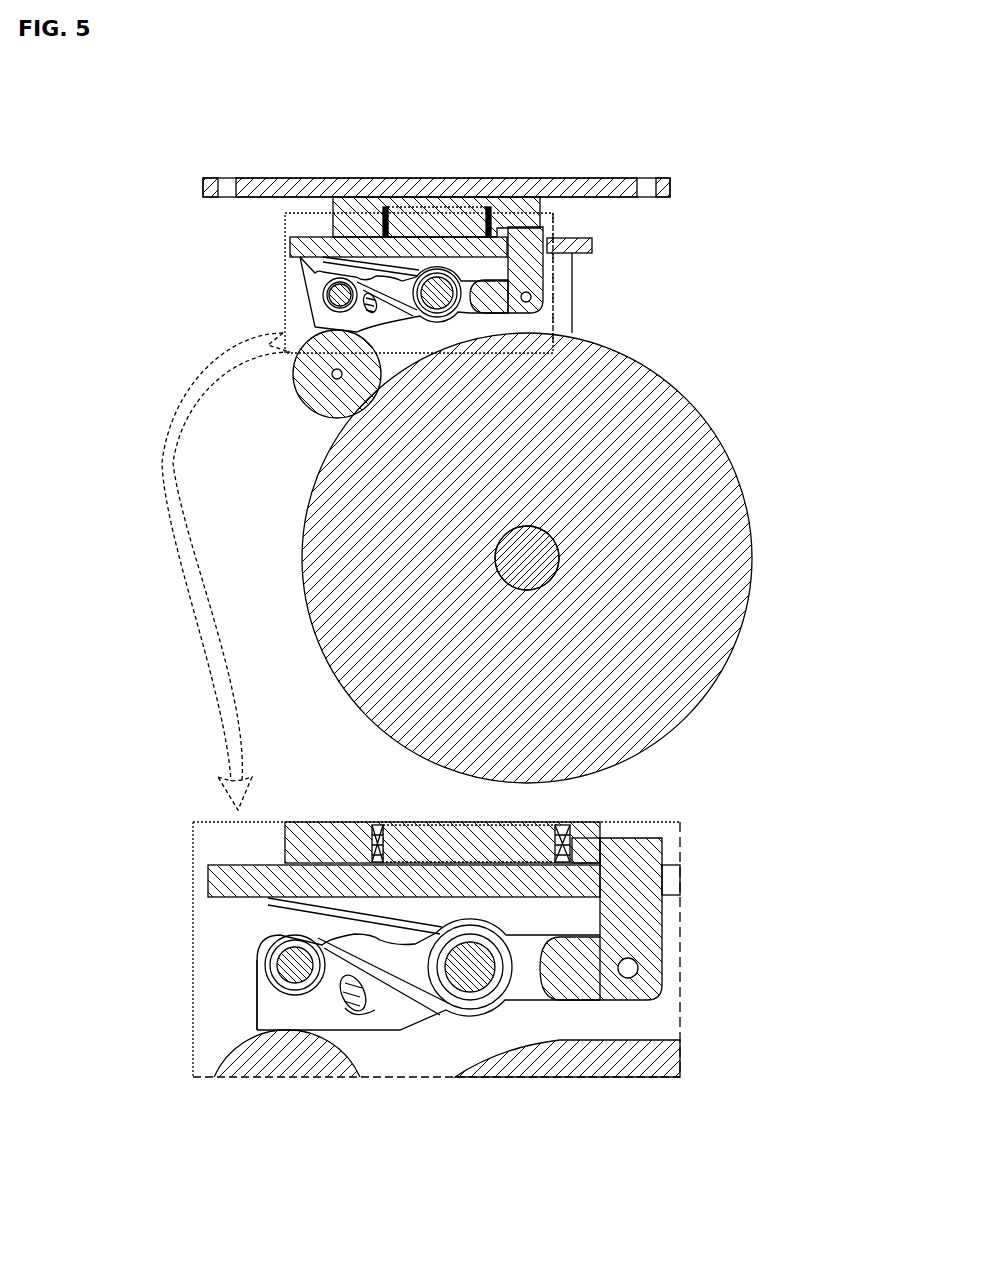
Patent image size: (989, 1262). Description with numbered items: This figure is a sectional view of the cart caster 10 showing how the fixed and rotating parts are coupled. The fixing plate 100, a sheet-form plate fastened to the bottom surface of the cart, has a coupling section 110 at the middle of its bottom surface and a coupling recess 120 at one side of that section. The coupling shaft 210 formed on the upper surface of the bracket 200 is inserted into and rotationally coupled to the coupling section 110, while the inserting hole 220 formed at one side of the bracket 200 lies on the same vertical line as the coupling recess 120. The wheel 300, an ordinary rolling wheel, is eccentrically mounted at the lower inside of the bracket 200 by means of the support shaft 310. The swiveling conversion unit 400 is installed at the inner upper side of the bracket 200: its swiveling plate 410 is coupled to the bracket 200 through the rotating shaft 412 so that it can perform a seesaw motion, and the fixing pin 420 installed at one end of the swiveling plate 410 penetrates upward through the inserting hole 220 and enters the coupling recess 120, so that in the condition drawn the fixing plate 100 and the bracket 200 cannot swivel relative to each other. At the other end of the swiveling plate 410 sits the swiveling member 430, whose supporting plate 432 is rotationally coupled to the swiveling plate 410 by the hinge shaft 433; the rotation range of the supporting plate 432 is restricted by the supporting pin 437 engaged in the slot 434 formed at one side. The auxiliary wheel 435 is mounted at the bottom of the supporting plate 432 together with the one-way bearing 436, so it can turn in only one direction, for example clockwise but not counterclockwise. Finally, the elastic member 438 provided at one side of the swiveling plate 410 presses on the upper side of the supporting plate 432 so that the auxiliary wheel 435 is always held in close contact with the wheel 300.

The cart caster 10 is at (147, 93).
The fixing plate 100 is at (293, 178).
The coupling section 110 is at (333, 200).
The coupling recess 120 is at (590, 843).
The bracket 200 is at (592, 243).
The coupling shaft 210 is at (440, 207).
The inserting hole 220 is at (672, 877).
The wheel 300 is at (730, 462).
The support shaft 310 is at (555, 572).
The swiveling conversion unit 400 is at (540, 317).
The swiveling plate 410 is at (453, 1028).
The rotating shaft 412 is at (482, 973).
The fixing pin 420 is at (662, 920).
The swiveling member 430 is at (313, 326).
The supporting plate 432 is at (273, 1010).
The hinge shaft 433 is at (295, 968).
The slot 434 is at (362, 1008).
The auxiliary wheel 435 is at (293, 372).
The one-way bearing 436 is at (337, 373).
The supporting pin 437 is at (380, 987).
The elastic member 438 is at (290, 933).